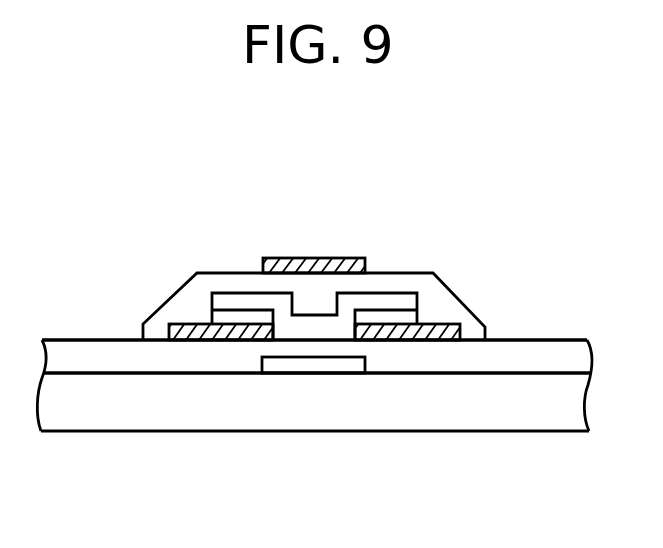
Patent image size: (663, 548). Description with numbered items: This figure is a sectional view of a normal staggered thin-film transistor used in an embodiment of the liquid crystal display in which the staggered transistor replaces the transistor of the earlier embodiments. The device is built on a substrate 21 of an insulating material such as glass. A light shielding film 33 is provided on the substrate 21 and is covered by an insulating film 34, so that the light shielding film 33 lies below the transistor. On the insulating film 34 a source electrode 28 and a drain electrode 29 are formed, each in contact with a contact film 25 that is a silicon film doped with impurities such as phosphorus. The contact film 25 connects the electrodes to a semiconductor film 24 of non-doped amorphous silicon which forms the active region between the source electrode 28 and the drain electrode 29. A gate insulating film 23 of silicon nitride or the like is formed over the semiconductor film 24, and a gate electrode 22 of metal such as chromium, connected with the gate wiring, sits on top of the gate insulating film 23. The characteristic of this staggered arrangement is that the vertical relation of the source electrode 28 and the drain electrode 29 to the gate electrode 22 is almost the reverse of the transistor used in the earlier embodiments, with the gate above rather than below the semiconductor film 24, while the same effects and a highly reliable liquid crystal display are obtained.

The substrate 21 is at (523, 413).
The gate electrode 22 is at (312, 263).
The gate insulating film 23 is at (440, 328).
The semiconductor film 24 is at (375, 300).
The contact film 25 is at (243, 314).
The source electrode 28 is at (190, 330).
The drain electrode 29 is at (472, 325).
The light shielding film 33 is at (302, 367).
The insulating film 34 is at (401, 362).